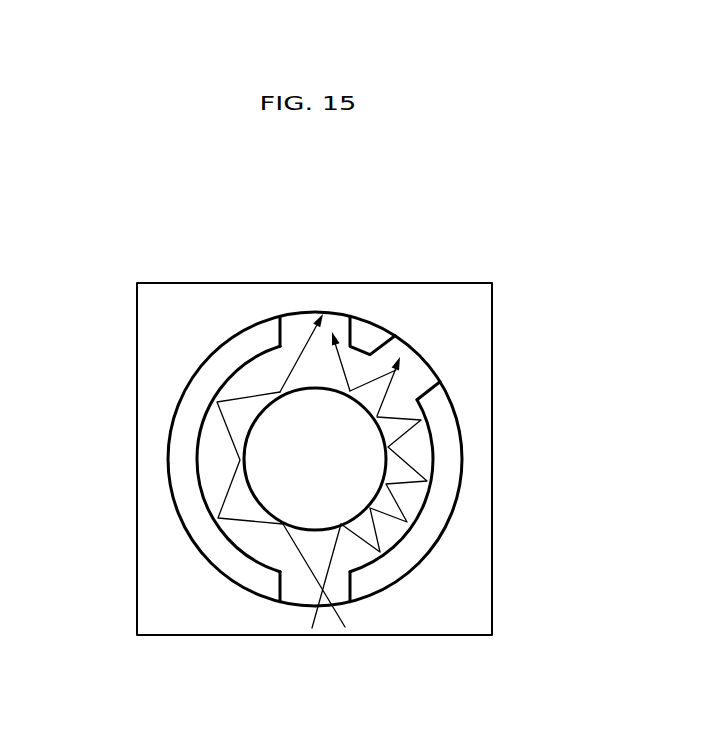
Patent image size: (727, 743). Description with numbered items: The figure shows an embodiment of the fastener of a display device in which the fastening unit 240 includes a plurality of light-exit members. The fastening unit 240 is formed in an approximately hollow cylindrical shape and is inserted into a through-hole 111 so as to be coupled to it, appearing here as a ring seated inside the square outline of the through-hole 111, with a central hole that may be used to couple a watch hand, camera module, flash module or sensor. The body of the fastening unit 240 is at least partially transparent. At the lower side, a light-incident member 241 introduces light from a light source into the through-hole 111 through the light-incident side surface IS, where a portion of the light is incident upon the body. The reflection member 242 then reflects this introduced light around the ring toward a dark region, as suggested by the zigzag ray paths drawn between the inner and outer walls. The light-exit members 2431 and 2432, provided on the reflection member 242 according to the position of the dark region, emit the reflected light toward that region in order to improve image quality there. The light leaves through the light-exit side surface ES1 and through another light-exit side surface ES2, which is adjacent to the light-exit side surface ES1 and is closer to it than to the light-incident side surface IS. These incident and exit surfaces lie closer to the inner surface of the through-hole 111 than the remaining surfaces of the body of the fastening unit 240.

The through-hole 111 is at (440, 566).
The fastening unit 240 is at (247, 347).
The light-incident member 241 is at (295, 578).
The reflection member 242 is at (217, 454).
The light-exit member 2431 is at (295, 332).
The light-exit member 2432 is at (391, 349).
The light-exit side surface ES1 is at (327, 318).
The another light-exit side surface ES2 is at (426, 378).
The light-incident side surface IS is at (318, 576).